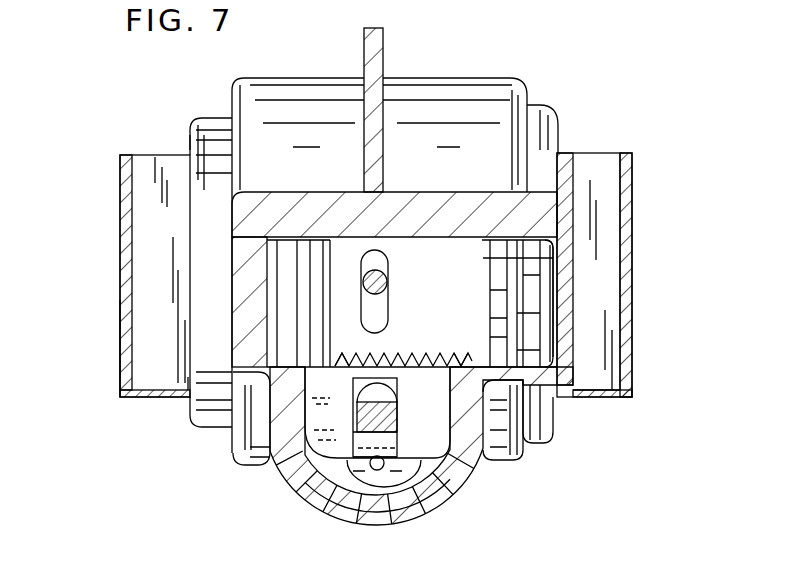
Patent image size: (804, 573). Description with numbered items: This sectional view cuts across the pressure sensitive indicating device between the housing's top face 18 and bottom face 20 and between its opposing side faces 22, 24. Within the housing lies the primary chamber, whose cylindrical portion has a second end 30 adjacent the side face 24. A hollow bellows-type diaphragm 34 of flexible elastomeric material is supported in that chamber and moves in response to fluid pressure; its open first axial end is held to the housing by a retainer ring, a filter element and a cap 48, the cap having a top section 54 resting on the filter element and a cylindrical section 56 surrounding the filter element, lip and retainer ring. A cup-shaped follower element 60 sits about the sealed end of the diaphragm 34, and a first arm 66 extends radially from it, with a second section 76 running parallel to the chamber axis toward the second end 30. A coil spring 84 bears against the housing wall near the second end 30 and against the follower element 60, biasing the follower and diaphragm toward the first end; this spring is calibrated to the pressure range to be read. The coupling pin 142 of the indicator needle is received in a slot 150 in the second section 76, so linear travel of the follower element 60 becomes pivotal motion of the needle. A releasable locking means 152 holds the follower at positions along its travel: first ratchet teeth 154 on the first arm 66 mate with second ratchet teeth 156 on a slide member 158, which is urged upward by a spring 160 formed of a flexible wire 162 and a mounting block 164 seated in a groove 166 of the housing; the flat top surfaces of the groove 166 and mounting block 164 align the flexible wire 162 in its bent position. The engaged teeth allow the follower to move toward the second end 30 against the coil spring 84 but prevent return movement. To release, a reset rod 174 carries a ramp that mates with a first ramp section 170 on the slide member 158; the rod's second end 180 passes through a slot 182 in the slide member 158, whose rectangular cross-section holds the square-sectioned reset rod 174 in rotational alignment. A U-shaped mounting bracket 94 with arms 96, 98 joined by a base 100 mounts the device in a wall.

The top face 18 is at (474, 78).
The bottom face 20 is at (262, 463).
The side face 22 is at (232, 167).
The side face 24 is at (577, 180).
The second end 30 is at (548, 290).
The diaphragm 34 is at (292, 262).
The cap 48 is at (194, 124).
The top section 54 is at (190, 218).
The cylindrical section 56 is at (215, 117).
The follower element 60 is at (424, 252).
The first arm 66 is at (483, 232).
The second section 76 is at (452, 323).
The coil spring 84 is at (537, 313).
The mounting bracket 94 is at (114, 360).
The arm 96 is at (122, 318).
The arm 98 is at (633, 298).
The base 100 is at (157, 392).
The coupling pin 142 is at (388, 281).
The slot 150 is at (418, 260).
The releasable locking means 152 is at (452, 469).
The first ratchet teeth 154 is at (453, 361).
The second ratchet teeth 156 is at (393, 361).
The slide member 158 is at (333, 450).
The spring 160 is at (378, 490).
The flexible wire 162 is at (420, 503).
The mounting block 164 is at (448, 505).
The groove 166 is at (360, 512).
The first ramp section 170 is at (399, 443).
The reset rod 174 is at (397, 410).
The second end 180 is at (368, 394).
The slot 182 is at (397, 387).